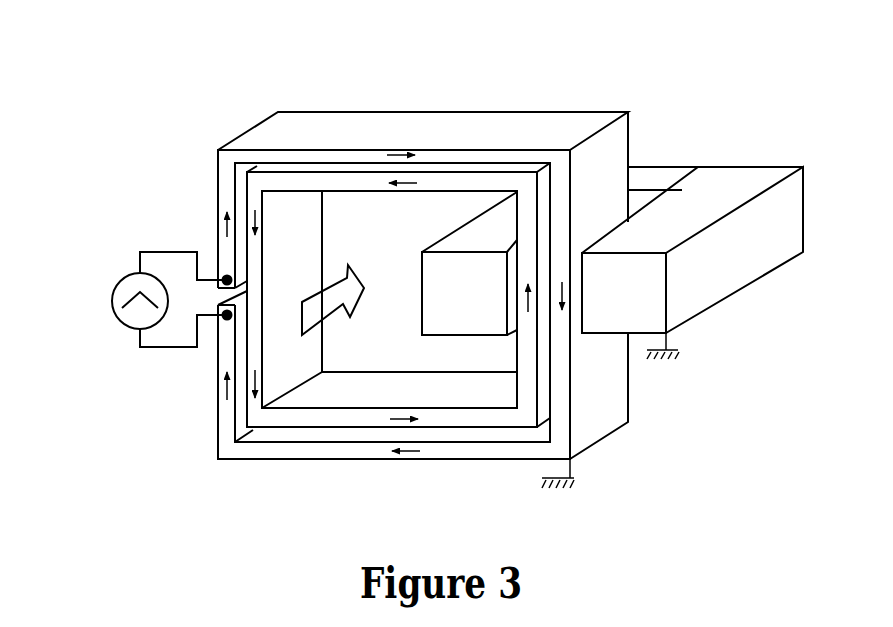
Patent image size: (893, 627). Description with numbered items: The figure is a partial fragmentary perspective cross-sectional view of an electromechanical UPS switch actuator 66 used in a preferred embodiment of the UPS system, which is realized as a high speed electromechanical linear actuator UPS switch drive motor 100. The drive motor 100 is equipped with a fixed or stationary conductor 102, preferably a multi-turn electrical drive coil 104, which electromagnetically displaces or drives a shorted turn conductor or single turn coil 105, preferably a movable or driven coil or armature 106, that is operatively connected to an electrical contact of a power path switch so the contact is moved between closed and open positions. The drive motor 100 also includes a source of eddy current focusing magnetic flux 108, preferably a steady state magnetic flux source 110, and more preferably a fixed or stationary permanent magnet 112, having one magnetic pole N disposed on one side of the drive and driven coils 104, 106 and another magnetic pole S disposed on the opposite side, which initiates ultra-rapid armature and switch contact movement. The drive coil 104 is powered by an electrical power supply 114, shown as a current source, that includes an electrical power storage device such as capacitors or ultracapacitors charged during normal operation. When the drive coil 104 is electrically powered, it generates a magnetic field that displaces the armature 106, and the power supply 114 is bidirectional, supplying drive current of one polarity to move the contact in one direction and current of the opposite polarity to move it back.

The electromechanical UPS switch actuator 66 is at (178, 155).
The high speed electromechanical linear actuator UPS switch drive motor 100 is at (200, 483).
The fixed or stationary conductor 102 is at (492, 128).
The multi-turn electrical drive coil 104 is at (612, 440).
The shorted turn conductor or single turn coil 105 is at (292, 182).
The movable or driven coil or armature 106 is at (382, 362).
The source of eddy current focusing magnetic flux 108 is at (757, 312).
The steady state magnetic flux source 110 is at (760, 150).
The fixed or stationary permanent magnet 112 is at (692, 178).
The electrical power supply 114 is at (115, 325).